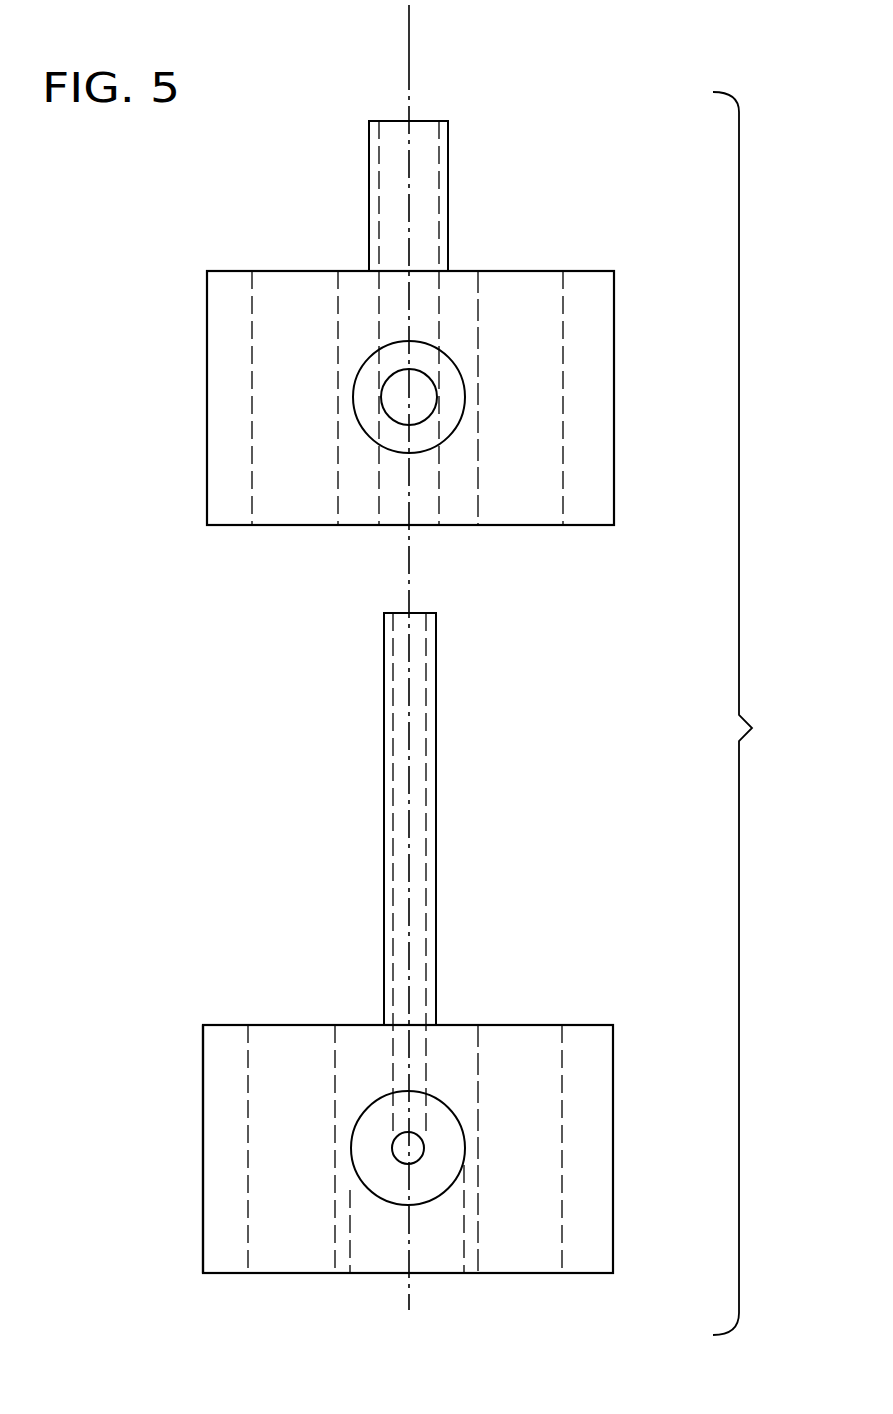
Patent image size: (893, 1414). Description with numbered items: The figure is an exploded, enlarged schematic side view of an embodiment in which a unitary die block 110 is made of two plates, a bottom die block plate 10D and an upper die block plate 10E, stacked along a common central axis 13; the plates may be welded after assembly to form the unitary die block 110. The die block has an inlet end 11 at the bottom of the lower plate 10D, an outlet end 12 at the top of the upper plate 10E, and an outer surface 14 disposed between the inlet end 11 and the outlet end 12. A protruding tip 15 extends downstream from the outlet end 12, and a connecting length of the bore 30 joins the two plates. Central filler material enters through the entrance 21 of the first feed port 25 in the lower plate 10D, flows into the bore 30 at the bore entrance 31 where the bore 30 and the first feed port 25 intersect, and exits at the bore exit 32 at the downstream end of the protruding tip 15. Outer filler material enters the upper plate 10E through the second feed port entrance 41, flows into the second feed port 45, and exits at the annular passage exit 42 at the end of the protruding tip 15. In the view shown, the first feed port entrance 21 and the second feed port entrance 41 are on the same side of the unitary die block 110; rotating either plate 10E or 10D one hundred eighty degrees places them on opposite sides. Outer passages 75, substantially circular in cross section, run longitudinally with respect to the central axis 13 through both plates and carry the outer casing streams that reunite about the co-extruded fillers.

The central axis 13 is at (409, 53).
The unitary die block 110 is at (763, 713).
The protruding tip 15 is at (353, 146).
The annular passage exit 42 is at (384, 120).
The upper die block plate 10E is at (614, 352).
The outlet end 12 is at (468, 271).
The outer passages 75 is at (289, 270).
The second feed port entrance 41 is at (373, 437).
The second feed port 45 is at (364, 409).
The bore 30 is at (412, 798).
The bore exit 32 is at (415, 611).
The bottom die block plate 10D is at (613, 1090).
The outer surface 14 is at (203, 1137).
The inlet end 11 is at (233, 1273).
The first feed port 25 is at (428, 1178).
The entrance 21 is at (377, 1197).
The bore entrance 31 is at (416, 1147).